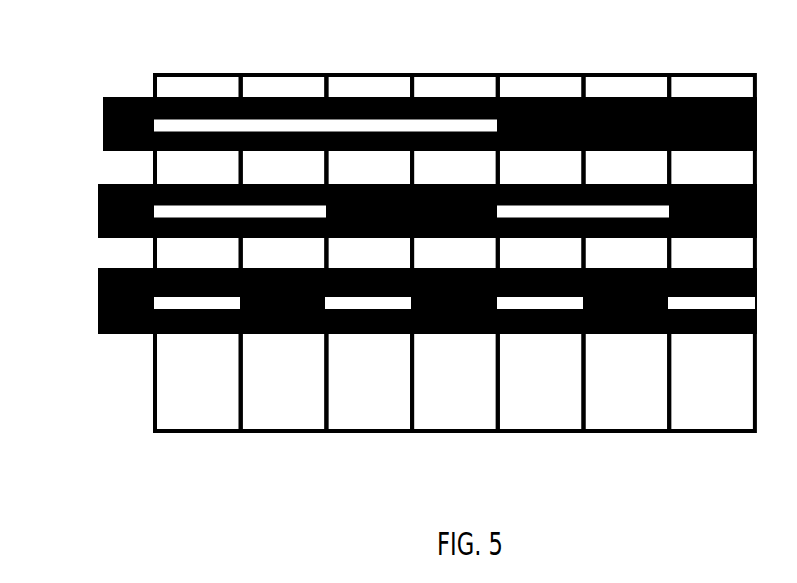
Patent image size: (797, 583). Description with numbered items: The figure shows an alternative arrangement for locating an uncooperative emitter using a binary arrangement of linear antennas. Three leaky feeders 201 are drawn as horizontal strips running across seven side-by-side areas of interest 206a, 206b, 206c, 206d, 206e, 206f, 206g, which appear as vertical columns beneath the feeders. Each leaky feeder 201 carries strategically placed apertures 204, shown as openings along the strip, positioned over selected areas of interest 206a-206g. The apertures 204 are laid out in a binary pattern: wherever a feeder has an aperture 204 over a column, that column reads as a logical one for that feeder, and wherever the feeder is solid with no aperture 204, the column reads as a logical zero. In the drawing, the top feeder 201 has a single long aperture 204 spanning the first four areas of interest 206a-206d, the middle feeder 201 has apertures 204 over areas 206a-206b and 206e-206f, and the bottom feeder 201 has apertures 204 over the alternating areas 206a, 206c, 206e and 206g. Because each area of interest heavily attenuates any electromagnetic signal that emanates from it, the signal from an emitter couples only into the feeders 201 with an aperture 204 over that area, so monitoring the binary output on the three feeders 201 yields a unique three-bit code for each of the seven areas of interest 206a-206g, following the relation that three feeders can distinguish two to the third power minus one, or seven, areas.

The conductive strip / bus bar 201 is at (103, 115).
The apertures 204 is at (195, 125).
The area of interest 206a is at (167, 408).
The area of interest 206b is at (252, 408).
The area of interest 206c is at (340, 410).
The area of interest 206d is at (424, 410).
The area of interest 206e is at (510, 409).
The area of interest 206f is at (596, 409).
The area of interest 206g is at (682, 409).